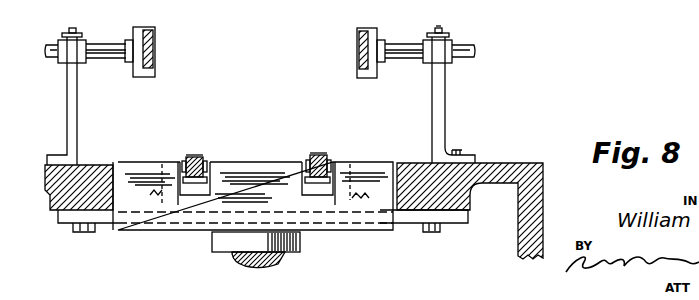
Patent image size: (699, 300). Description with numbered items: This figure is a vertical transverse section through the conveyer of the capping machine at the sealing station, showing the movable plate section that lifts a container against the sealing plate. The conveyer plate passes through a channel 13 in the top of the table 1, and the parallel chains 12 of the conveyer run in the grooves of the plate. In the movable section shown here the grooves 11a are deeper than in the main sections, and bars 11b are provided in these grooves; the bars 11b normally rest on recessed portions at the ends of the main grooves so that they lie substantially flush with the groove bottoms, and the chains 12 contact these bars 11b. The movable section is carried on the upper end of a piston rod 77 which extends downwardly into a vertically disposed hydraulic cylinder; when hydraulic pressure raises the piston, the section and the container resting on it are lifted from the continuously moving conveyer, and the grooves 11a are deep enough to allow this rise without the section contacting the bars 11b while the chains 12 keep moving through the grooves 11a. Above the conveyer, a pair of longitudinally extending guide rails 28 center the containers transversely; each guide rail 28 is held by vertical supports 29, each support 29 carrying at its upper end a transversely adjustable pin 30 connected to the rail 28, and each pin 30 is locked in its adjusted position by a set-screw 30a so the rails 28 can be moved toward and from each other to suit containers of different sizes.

The table 1 is at (545, 188).
The grooves 11a is at (195, 190).
The bars 11b is at (318, 186).
The chains 12 is at (316, 160).
The channel 13 is at (113, 162).
The guide rail 28 is at (357, 33).
The vertical support 29 is at (440, 90).
The transversely adjustable pin 30 is at (415, 58).
The set-screw 30a is at (441, 33).
The piston rod 77 is at (283, 265).